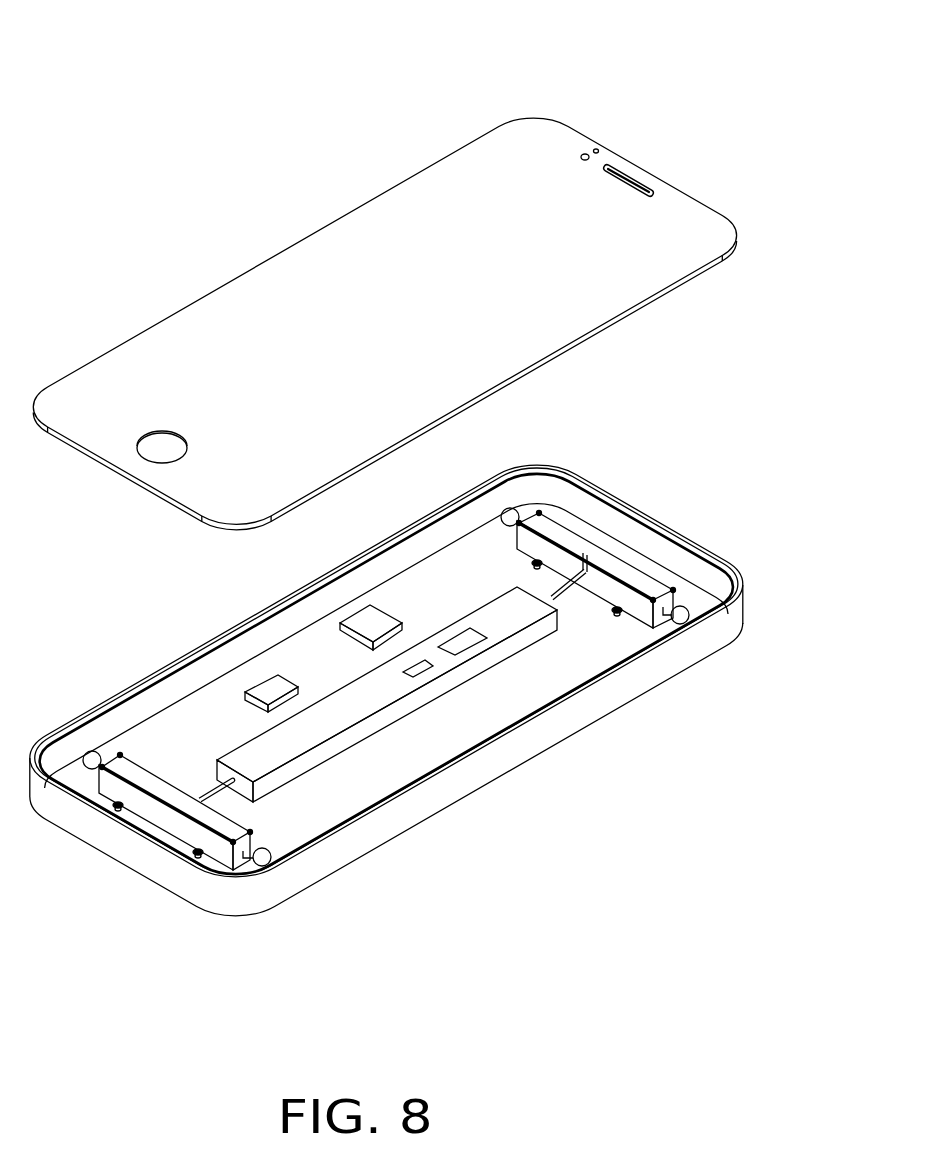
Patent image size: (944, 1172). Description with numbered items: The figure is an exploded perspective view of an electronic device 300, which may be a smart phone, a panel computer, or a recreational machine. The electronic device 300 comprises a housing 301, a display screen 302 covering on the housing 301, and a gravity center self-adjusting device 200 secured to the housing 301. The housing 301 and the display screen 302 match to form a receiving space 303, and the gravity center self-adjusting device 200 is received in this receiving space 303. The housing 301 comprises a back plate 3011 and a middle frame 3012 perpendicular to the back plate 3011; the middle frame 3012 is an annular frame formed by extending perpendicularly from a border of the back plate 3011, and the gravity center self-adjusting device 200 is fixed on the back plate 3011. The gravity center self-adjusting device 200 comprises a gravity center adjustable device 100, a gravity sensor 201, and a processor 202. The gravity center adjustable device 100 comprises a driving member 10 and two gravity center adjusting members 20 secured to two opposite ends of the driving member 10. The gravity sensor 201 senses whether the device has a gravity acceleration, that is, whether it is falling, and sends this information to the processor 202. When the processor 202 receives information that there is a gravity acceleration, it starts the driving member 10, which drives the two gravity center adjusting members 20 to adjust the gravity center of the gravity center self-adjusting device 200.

The electronic device 300 is at (328, 36).
The housing 301 is at (780, 714).
The back plate 3011 is at (603, 647).
The middle frame 3012 is at (558, 715).
The display screen 302 is at (658, 227).
The receiving space 303 is at (187, 729).
The gravity center adjustable device 100 is at (374, 915).
The driving member 10 is at (277, 775).
The gravity center adjusting member 20 is at (223, 855).
The gravity center self-adjusting device 200 is at (587, 860).
The gravity sensor 201 is at (467, 648).
The processor 202 is at (420, 673).